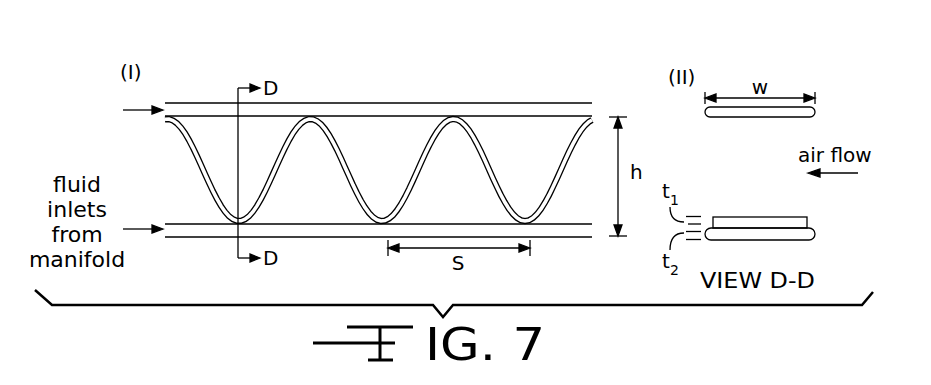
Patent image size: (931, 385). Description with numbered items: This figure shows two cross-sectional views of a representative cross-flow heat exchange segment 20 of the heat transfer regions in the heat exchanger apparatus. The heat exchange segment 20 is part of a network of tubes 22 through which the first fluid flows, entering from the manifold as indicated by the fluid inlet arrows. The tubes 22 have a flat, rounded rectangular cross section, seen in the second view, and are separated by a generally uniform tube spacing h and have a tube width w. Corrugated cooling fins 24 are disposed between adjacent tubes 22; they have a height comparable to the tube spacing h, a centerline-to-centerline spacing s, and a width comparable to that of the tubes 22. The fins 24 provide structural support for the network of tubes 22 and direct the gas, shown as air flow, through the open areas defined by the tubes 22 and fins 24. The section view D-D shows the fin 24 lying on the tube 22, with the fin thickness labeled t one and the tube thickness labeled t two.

The cross-flow heat exchange segment 20 is at (224, 78).
The tube 22 is at (287, 103).
The corrugated cooling fin 24 is at (345, 170).